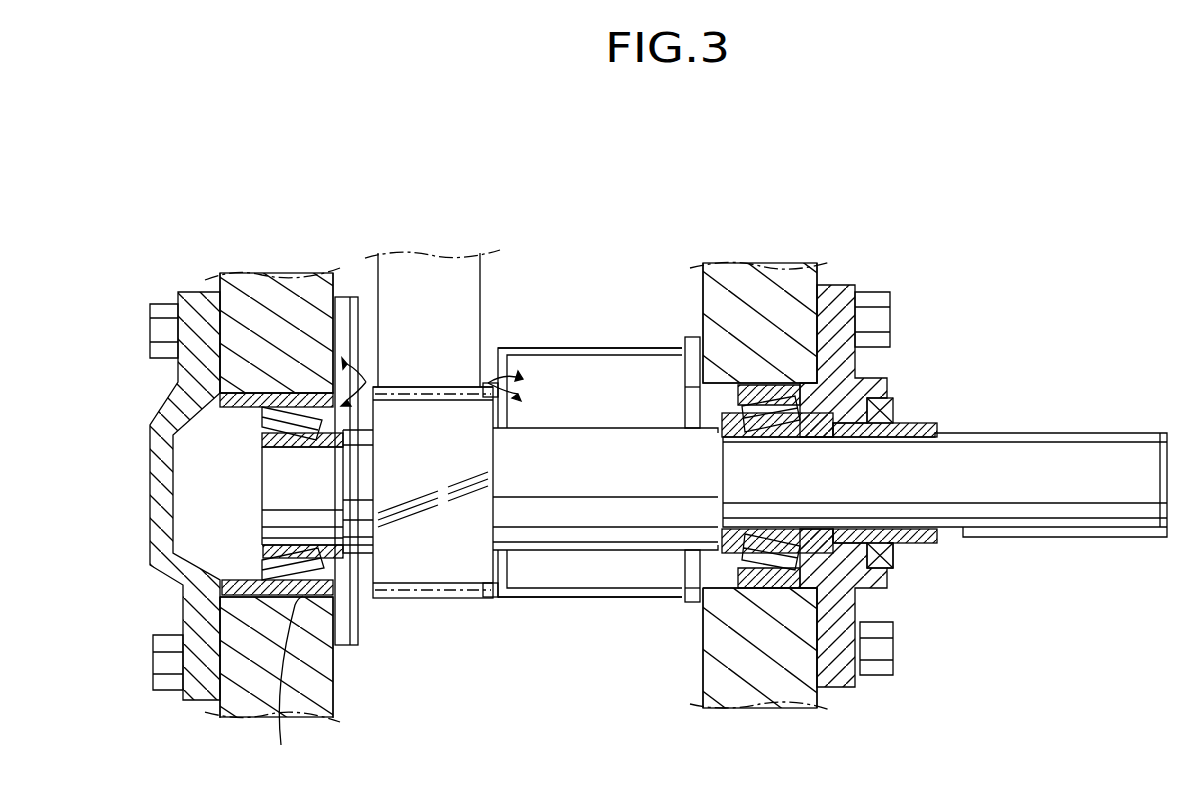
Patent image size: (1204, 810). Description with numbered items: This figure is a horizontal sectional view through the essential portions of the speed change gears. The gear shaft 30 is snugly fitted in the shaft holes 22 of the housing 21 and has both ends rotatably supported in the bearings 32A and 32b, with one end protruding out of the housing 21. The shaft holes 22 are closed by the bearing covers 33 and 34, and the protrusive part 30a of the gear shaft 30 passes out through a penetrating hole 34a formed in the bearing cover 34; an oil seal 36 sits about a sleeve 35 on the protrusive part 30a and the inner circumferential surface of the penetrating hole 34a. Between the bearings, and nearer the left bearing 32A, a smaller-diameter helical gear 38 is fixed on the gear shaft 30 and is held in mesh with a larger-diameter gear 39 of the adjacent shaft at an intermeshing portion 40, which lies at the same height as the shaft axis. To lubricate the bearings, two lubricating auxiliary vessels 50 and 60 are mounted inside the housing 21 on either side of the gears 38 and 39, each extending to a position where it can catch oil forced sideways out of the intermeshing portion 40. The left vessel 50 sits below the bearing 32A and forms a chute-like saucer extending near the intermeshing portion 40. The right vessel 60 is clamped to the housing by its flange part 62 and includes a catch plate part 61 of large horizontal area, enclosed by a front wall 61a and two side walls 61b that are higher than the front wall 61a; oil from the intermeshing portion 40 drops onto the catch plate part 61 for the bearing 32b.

The housing 21 is at (325, 683).
The shaft hole 22 is at (282, 682).
The gear shaft 30 is at (268, 475).
The protrusive part 30a is at (1090, 450).
The bearing 32A is at (260, 566).
The bearing 32b is at (800, 383).
The bearing cover 33 is at (150, 520).
The bearing cover 34 is at (838, 285).
The penetrating hole 34a is at (880, 405).
The sleeve 35 is at (937, 425).
The oil seal 36 is at (893, 558).
The gear 38 is at (432, 572).
The gear 39 is at (463, 282).
The intermeshing portion 40 is at (447, 383).
The lubricating auxiliary vessel 50 is at (375, 630).
The lubricating auxiliary vessel 60 is at (579, 489).
The catch plate part 61 is at (625, 572).
The front wall 61a is at (497, 600).
The side wall 61b is at (632, 348).
The flange part 62 is at (690, 605).